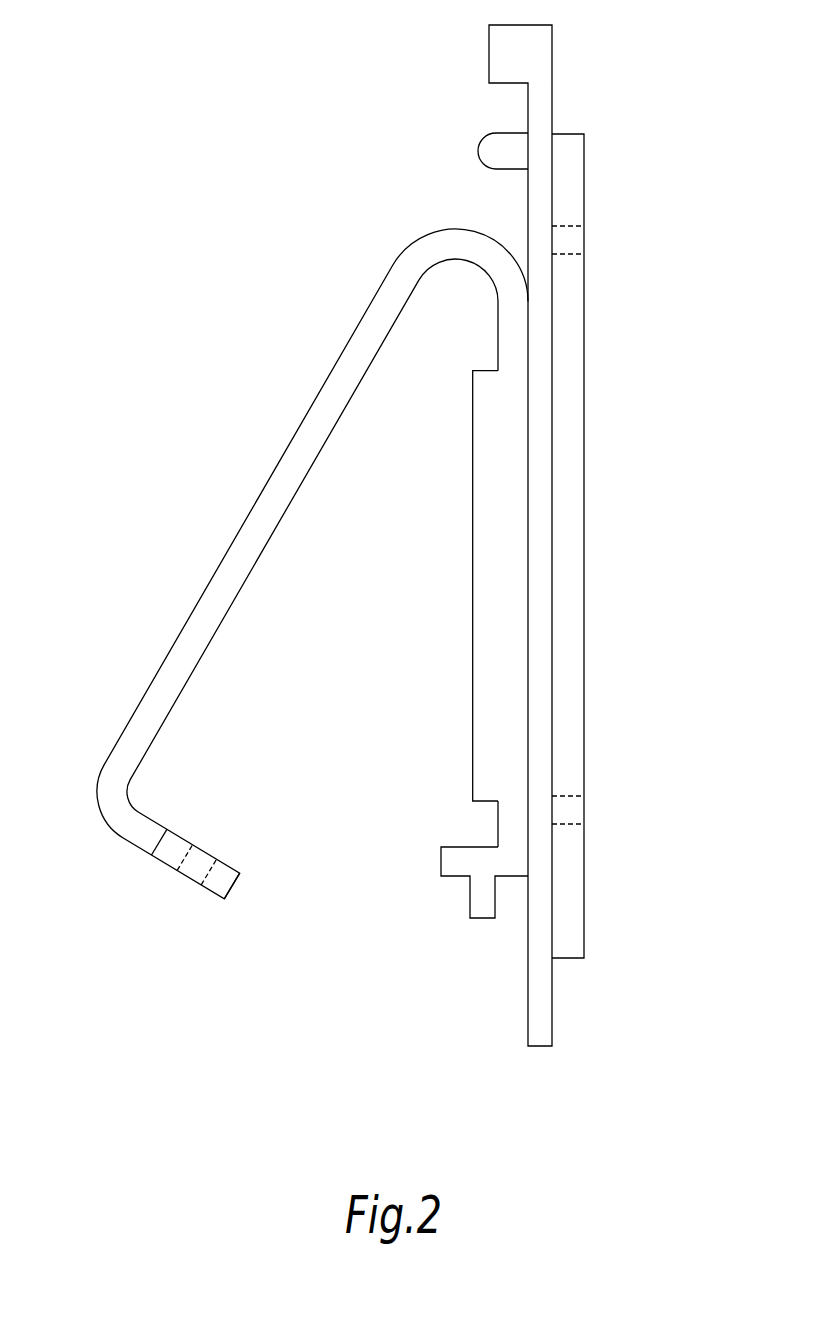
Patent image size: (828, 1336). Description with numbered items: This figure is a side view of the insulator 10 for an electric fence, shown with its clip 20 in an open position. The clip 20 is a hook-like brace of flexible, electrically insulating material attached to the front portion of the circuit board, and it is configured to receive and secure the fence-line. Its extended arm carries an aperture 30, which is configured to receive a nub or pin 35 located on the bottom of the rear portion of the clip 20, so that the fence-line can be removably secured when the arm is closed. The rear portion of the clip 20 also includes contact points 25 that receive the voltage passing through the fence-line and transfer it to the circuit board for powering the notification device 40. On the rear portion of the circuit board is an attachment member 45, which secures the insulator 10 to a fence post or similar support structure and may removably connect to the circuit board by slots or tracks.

The insulator 10 is at (258, 153).
The clip 20 is at (215, 590).
The contact points 25 is at (478, 716).
The aperture 30 is at (178, 898).
The pin 35 is at (478, 905).
The notification device 40 is at (480, 149).
The attachment member 45 is at (579, 330).